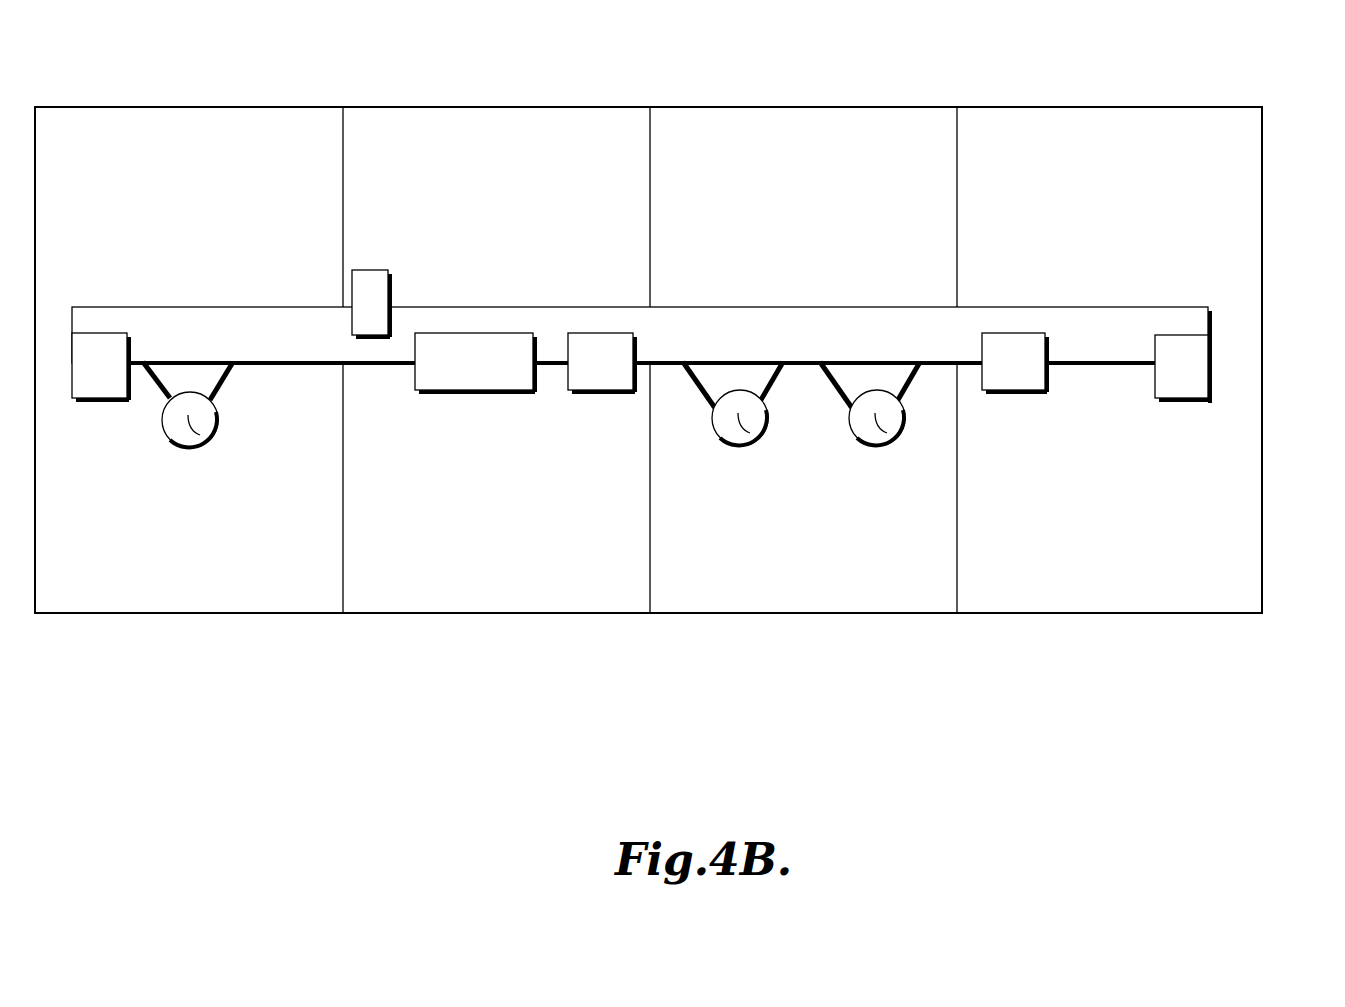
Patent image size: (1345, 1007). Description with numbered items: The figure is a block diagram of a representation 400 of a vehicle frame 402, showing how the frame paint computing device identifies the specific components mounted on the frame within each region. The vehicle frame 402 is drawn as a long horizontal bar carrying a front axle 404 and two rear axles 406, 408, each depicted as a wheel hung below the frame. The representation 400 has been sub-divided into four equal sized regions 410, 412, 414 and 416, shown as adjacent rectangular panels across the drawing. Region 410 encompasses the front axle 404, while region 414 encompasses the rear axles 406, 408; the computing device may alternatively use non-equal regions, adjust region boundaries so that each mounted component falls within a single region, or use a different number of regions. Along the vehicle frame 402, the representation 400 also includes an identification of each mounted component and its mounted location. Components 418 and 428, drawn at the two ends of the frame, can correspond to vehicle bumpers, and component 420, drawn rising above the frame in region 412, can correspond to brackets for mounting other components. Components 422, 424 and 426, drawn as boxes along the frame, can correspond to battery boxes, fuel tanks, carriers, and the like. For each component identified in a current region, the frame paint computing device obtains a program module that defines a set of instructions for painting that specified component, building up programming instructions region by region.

The representation of the vehicle frame 400 is at (188, 107).
The vehicle frame 402 is at (1208, 340).
The front axle 404 is at (210, 440).
The rear axle 406 is at (760, 438).
The rear axle 408 is at (897, 438).
The region 410 is at (310, 131).
The region 412 is at (617, 128).
The region 414 is at (923, 128).
The region 416 is at (1238, 131).
The component 418 is at (93, 400).
The component 420 is at (380, 270).
The component 422 is at (473, 392).
The component 424 is at (600, 333).
The component 426 is at (1013, 333).
The component 428 is at (1178, 400).